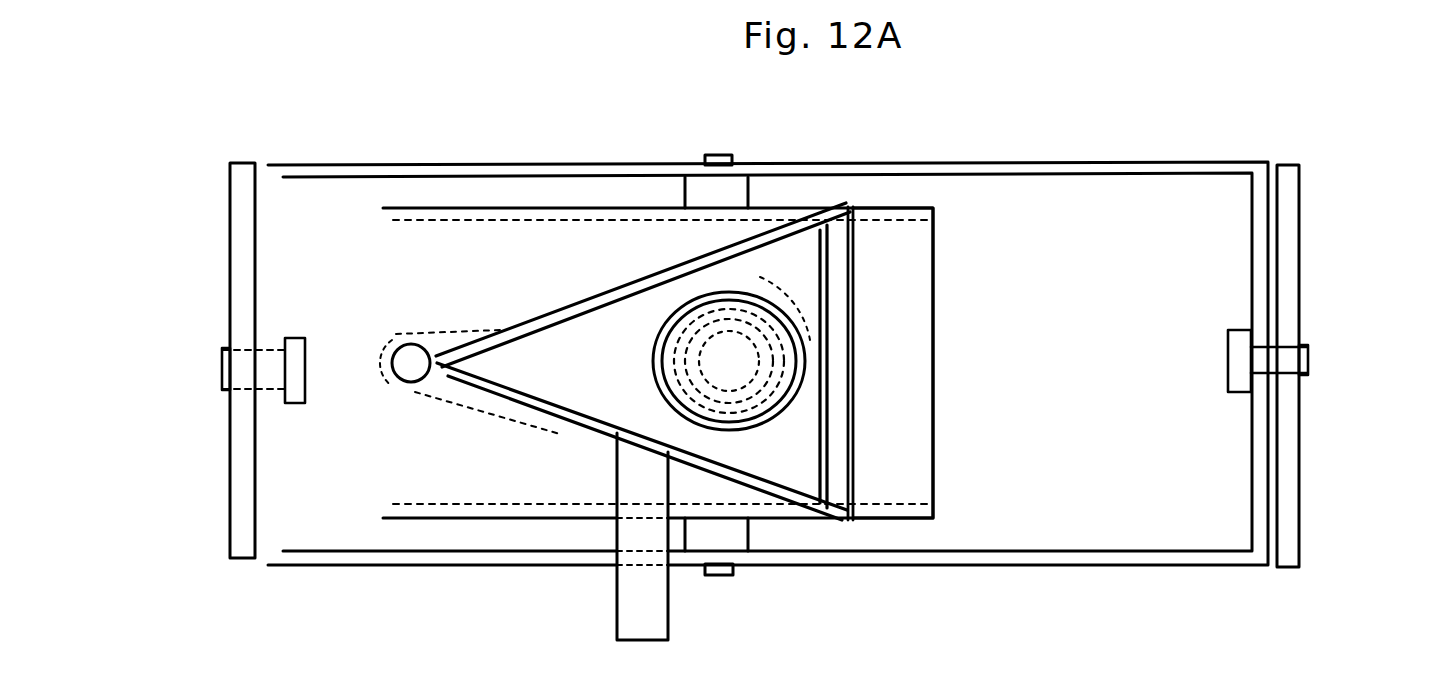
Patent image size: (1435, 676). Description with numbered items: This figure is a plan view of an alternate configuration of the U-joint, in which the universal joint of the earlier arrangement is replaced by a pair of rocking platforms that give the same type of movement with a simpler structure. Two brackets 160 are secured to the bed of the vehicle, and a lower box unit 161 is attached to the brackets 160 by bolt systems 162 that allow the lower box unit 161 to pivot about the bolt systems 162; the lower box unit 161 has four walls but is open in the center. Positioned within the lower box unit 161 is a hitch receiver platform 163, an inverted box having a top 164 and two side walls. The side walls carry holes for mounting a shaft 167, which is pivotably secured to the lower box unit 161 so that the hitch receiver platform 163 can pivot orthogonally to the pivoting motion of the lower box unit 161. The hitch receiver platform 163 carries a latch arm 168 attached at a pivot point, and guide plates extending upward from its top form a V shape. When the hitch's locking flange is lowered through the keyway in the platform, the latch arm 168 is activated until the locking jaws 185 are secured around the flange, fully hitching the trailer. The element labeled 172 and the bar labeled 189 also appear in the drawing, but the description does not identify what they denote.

The bracket 160 is at (228, 278).
The lower box unit 161 is at (1192, 163).
The bolt system 162 is at (307, 350).
The hitch receiver platform 163 is at (957, 300).
The top 164 is at (925, 401).
The shaft 167 is at (697, 193).
The latch arm 168 is at (668, 617).
The wheel hub 172 is at (738, 347).
The locking jaws 185 is at (657, 307).
The bar 189 is at (849, 288).